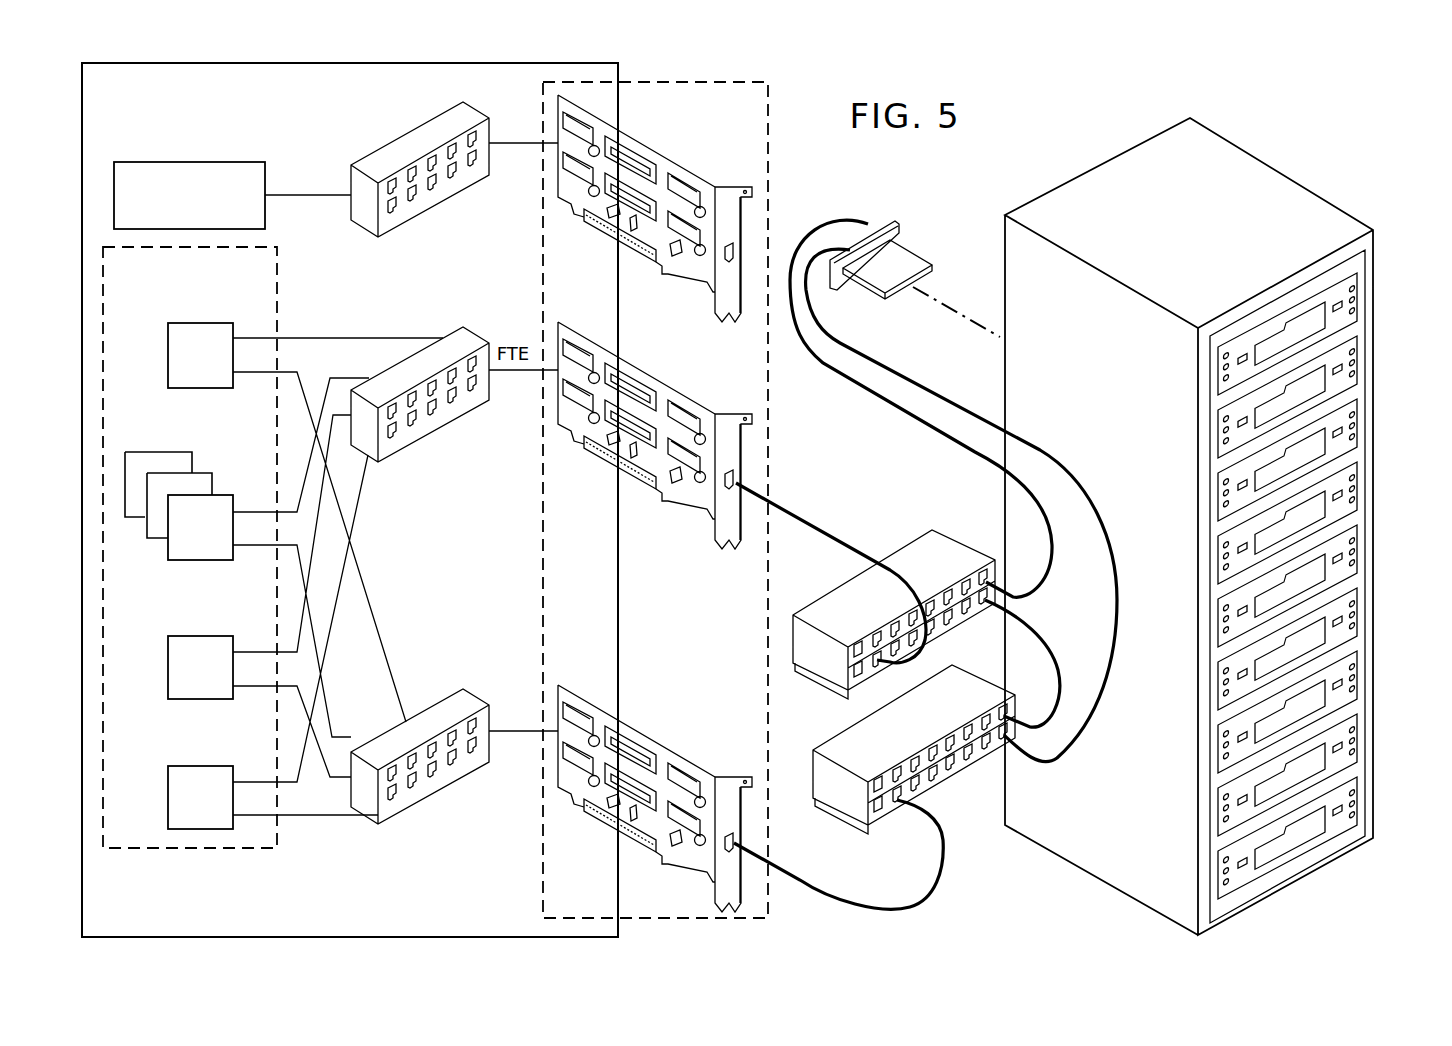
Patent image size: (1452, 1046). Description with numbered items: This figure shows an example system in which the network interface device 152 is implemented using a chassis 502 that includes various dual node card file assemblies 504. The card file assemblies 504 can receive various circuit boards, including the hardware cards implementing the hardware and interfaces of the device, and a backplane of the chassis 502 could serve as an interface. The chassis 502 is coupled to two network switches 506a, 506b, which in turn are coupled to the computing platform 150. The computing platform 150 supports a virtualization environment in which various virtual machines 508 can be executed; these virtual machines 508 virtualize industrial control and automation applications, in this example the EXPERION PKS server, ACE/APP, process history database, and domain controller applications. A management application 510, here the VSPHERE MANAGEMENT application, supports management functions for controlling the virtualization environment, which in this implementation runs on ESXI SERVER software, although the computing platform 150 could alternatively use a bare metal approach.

The computing platform 150 is at (463, 902).
The network interface device 152 is at (1318, 862).
The chassis 502 is at (1273, 164).
The dual node card file assemblies 504 is at (1360, 300).
The network switch 506a is at (908, 547).
The network switch 506b is at (957, 787).
The virtual machines 508 is at (187, 858).
The management application 510 is at (190, 161).